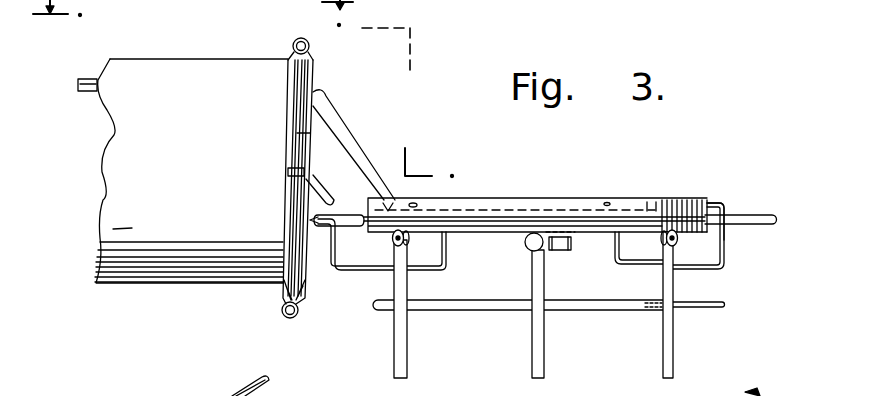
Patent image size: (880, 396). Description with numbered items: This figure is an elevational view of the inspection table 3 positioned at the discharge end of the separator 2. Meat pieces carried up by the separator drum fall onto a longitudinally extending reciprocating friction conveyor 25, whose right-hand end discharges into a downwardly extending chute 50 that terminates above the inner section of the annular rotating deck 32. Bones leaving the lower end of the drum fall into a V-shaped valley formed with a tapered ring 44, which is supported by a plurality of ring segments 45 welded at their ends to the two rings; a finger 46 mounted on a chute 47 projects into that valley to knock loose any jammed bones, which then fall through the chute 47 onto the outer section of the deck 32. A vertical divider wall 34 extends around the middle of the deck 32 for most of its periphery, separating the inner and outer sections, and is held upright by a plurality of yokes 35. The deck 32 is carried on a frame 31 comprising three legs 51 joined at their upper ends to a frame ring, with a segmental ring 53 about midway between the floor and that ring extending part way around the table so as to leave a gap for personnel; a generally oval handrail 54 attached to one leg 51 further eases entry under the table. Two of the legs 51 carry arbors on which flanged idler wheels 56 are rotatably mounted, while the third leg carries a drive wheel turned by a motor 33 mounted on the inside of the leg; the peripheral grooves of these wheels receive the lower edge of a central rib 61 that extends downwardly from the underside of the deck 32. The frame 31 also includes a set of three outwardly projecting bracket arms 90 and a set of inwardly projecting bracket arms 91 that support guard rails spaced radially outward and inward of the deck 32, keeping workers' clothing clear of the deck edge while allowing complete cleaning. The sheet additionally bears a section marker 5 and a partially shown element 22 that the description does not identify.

The separator 2 is at (210, 48).
The inspection table 3 is at (810, 216).
The section line 5 is at (340, 300).
The frame member 22 is at (779, 389).
The reciprocating friction conveyor 25 is at (88, 78).
The frame 31 is at (518, 322).
The annular rotating deck 32 is at (676, 200).
The motor 33 is at (560, 252).
The vertical divider wall 34 is at (526, 199).
The yokes 35 is at (714, 206).
The tapered ring 44 is at (300, 253).
The ring segments 45 is at (284, 262).
The finger 46 is at (310, 133).
The chute 47 is at (314, 194).
The chute 50 is at (342, 124).
The legs 51 is at (408, 366).
The segmental ring 53 is at (562, 305).
The handrail 54 is at (700, 303).
The flanged idler wheels 56 is at (392, 242).
The central rib 61 is at (703, 227).
The outwardly projecting bracket arms 90 is at (339, 270).
The inwardly projecting bracket arms 91 is at (447, 250).